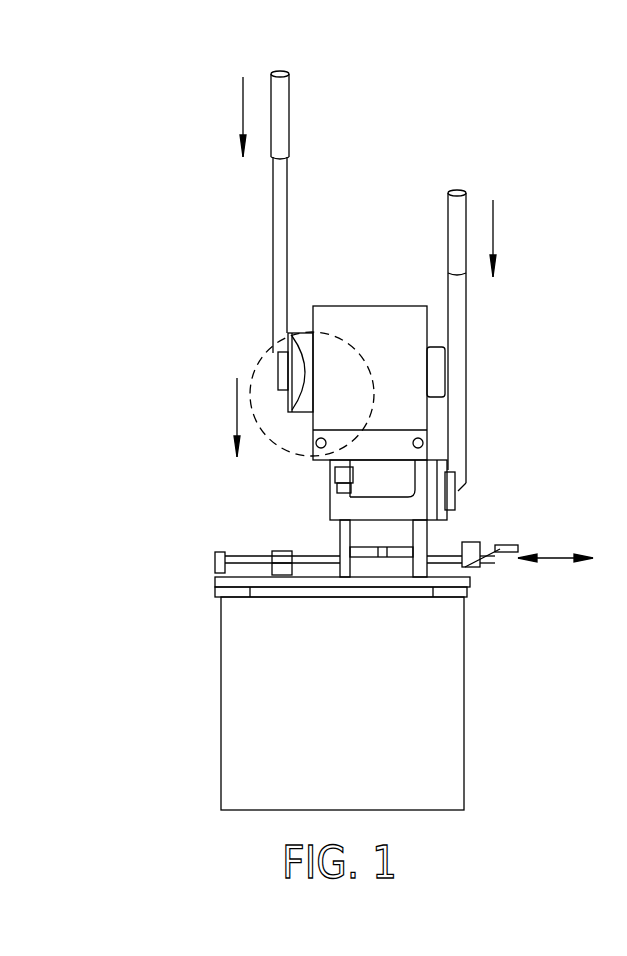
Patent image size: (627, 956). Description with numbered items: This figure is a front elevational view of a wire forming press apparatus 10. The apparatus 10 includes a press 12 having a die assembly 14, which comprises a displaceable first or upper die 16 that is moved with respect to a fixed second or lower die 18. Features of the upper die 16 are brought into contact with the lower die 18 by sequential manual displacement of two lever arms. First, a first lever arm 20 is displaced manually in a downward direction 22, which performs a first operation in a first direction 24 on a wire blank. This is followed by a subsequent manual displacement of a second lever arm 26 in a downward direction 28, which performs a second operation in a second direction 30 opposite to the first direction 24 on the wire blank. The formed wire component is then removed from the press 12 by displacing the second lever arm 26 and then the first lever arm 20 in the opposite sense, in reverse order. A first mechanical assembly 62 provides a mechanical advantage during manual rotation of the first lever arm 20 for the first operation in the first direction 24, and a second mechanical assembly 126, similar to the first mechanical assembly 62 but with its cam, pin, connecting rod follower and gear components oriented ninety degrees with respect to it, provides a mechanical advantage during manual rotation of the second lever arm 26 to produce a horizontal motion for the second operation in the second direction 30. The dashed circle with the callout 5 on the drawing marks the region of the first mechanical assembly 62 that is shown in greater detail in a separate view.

The wire forming press apparatus 10 is at (480, 122).
The press 12 is at (370, 306).
The die assembly 14 is at (338, 491).
The upper die 16 is at (338, 464).
The lower die 18 is at (402, 568).
The first lever arm 20 is at (283, 118).
The downward direction 22 is at (240, 106).
The first direction 24 is at (236, 410).
The second lever arm 26 is at (449, 236).
The downward direction 28 is at (495, 232).
The second direction 30 is at (555, 560).
The first mechanical assembly 62 is at (279, 376).
The second mechanical assembly 126 is at (456, 500).
The detail view indicator 5 is at (262, 447).